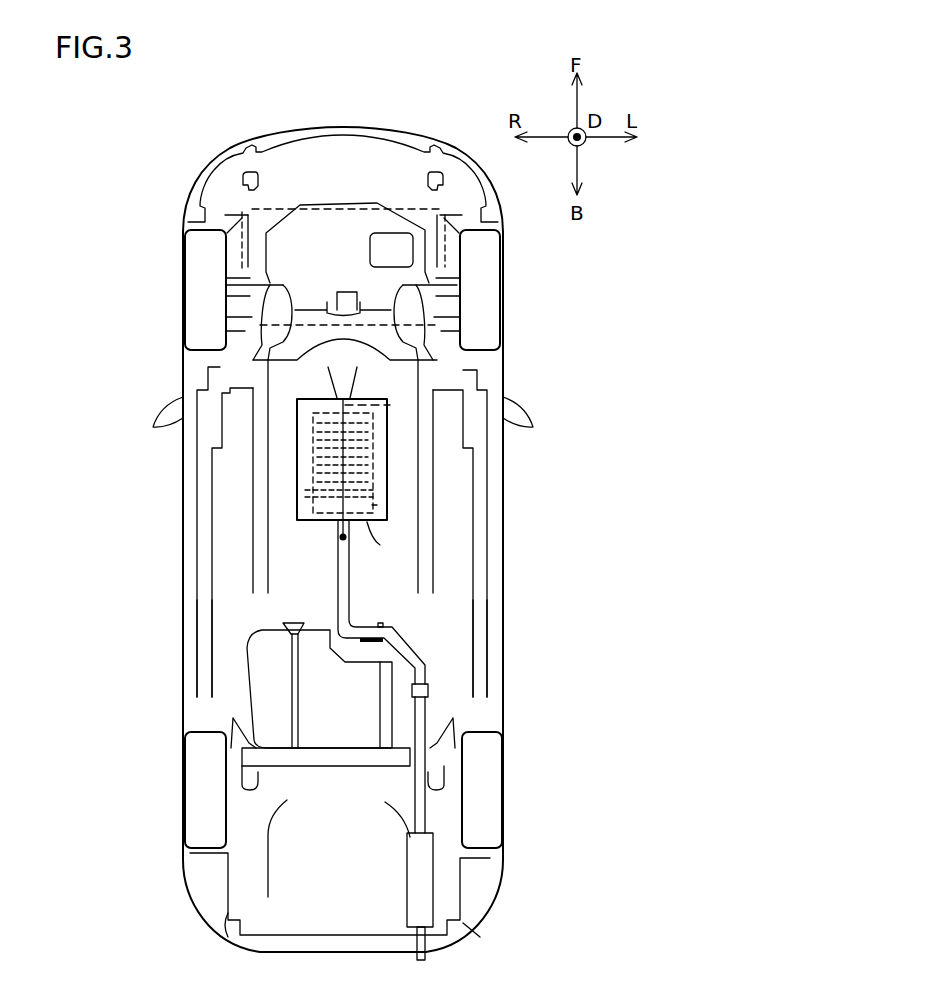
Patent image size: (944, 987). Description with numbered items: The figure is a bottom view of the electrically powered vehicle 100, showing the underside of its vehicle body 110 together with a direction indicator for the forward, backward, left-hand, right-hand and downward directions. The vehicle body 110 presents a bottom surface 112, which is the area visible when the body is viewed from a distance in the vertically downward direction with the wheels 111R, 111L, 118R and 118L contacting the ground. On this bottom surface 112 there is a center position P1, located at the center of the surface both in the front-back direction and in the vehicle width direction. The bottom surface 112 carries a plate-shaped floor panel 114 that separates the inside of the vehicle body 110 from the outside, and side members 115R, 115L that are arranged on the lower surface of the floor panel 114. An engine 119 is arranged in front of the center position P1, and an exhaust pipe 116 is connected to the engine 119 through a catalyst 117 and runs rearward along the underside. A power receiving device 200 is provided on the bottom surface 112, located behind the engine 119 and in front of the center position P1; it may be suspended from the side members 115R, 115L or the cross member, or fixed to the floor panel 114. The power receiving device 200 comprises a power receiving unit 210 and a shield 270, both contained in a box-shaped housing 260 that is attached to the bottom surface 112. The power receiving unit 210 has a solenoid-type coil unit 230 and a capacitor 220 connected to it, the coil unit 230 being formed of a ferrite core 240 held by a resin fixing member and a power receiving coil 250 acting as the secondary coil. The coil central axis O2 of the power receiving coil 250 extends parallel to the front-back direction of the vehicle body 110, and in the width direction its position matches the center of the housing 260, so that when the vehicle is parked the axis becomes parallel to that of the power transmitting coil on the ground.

The electrically powered vehicle 100 is at (193, 125).
The vehicle body 110 is at (341, 126).
The wheel 111R is at (205, 270).
The wheel 111L is at (485, 298).
The bottom surface 112 is at (318, 566).
The floor panel 114 is at (327, 598).
The side member 115R is at (205, 657).
The side member 115L is at (480, 665).
The exhaust pipe 116 is at (415, 731).
The catalyst 117 is at (250, 380).
The wheel 118R is at (205, 789).
The wheel 118L is at (482, 808).
The engine 119 is at (283, 208).
The power receiving device 200 is at (385, 447).
The power receiving unit 210 is at (497, 475).
The capacitor 220 is at (385, 505).
The coil unit 230 is at (471, 475).
The core 240 is at (385, 480).
The power receiving coil 250 is at (382, 456).
The housing 260 is at (367, 522).
The shield 270 is at (305, 490).
The center position P1 is at (340, 536).
The coil central axis O2 is at (390, 405).